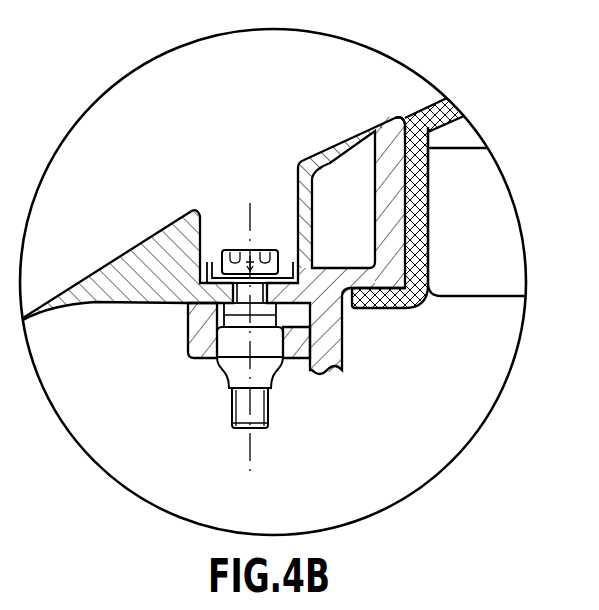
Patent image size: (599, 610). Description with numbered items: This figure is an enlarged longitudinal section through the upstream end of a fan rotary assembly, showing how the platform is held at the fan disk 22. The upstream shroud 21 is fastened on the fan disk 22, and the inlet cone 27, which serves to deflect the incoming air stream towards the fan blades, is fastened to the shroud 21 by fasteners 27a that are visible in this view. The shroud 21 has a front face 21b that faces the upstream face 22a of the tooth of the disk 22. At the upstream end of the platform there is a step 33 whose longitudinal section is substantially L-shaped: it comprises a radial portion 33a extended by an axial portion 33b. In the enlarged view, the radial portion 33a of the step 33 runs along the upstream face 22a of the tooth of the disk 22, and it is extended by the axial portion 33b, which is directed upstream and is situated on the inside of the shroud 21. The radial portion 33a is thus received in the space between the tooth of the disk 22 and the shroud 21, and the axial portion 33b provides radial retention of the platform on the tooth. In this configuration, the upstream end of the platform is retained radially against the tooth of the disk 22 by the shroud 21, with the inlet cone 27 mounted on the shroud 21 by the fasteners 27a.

The upstream shroud 21 is at (386, 134).
The front face of the shroud 21b is at (414, 126).
The fan disk 22 is at (486, 284).
The upstream face of the tooth 22a is at (431, 183).
The inlet cone 27 is at (153, 252).
The fasteners 27a is at (237, 351).
The step 33 is at (412, 307).
The radial portion 33a is at (418, 232).
The axial portion 33b is at (369, 309).